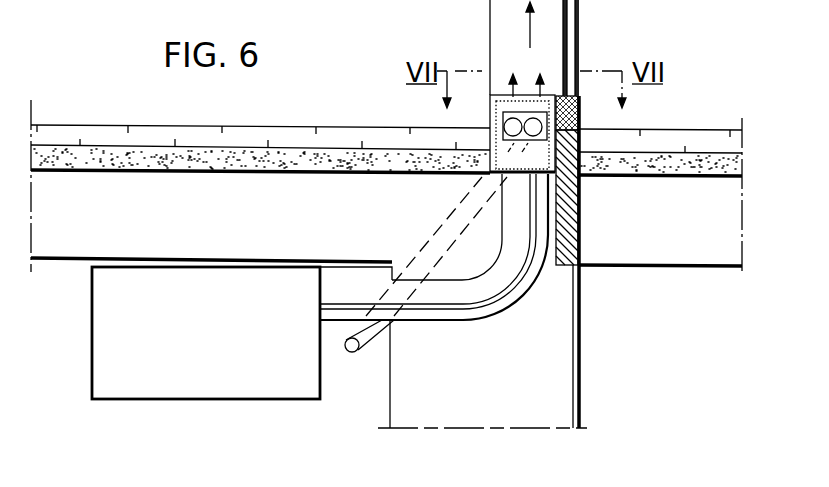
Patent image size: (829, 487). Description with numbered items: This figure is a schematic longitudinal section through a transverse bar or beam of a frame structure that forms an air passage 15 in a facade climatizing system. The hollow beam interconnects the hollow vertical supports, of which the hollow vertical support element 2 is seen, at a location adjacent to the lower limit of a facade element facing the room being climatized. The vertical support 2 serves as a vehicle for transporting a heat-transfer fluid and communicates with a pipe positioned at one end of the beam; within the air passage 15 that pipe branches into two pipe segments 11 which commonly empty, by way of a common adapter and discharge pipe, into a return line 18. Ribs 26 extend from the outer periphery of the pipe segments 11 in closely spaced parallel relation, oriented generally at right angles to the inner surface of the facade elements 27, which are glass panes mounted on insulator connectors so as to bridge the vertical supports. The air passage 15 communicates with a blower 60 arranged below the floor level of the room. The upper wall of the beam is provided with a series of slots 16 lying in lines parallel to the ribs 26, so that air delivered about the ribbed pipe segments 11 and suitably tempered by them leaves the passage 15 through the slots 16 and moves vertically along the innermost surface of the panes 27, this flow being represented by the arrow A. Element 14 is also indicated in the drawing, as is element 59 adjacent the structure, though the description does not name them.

The hollow vertical support element 2 is at (490, 16).
The arrow A is at (528, 37).
The pipe segments 11 is at (580, 132).
The exhaust duct 14 is at (537, 282).
The air passage 15 is at (490, 108).
The slots 16 is at (519, 96).
The return line 18 is at (352, 353).
The ribs 26 is at (503, 122).
The facade elements 27 is at (568, 33).
The ceiling 59 is at (61, 259).
The blower 60 is at (205, 392).